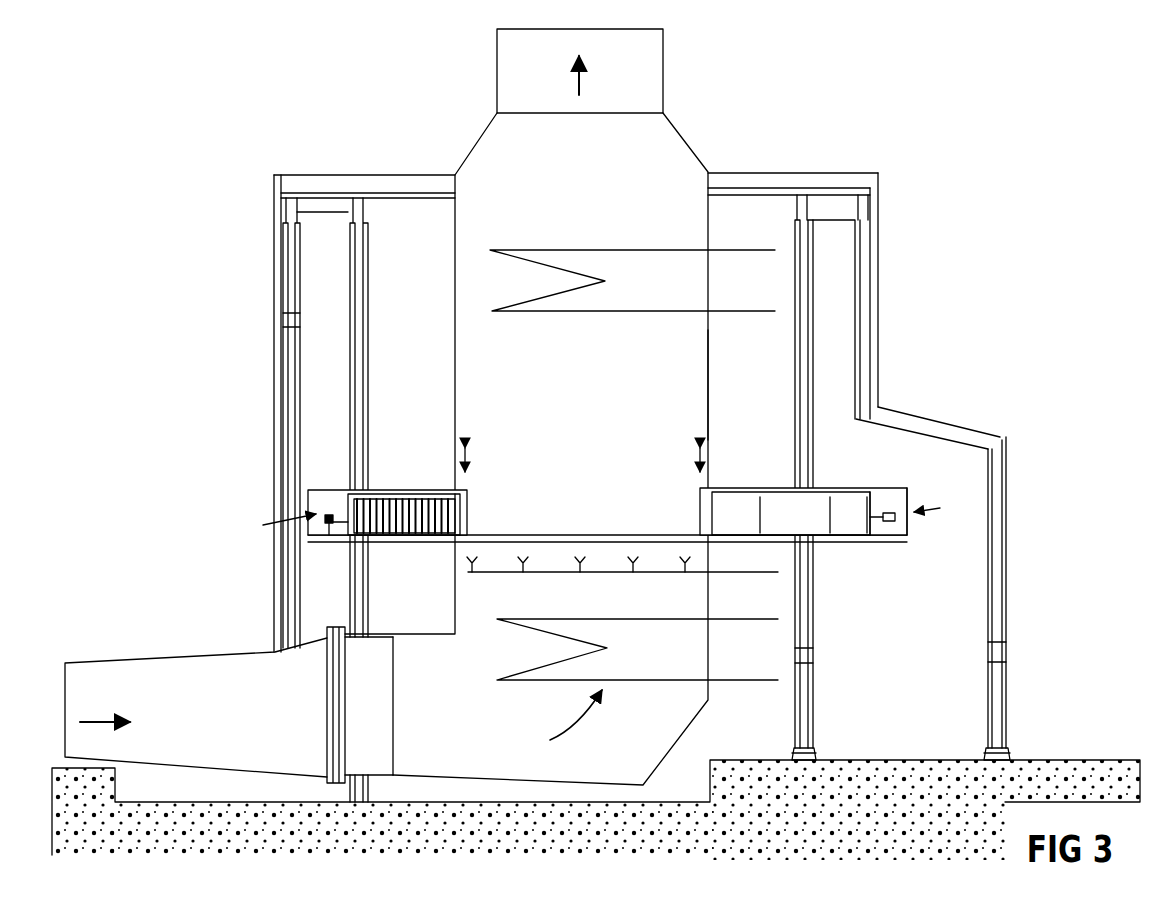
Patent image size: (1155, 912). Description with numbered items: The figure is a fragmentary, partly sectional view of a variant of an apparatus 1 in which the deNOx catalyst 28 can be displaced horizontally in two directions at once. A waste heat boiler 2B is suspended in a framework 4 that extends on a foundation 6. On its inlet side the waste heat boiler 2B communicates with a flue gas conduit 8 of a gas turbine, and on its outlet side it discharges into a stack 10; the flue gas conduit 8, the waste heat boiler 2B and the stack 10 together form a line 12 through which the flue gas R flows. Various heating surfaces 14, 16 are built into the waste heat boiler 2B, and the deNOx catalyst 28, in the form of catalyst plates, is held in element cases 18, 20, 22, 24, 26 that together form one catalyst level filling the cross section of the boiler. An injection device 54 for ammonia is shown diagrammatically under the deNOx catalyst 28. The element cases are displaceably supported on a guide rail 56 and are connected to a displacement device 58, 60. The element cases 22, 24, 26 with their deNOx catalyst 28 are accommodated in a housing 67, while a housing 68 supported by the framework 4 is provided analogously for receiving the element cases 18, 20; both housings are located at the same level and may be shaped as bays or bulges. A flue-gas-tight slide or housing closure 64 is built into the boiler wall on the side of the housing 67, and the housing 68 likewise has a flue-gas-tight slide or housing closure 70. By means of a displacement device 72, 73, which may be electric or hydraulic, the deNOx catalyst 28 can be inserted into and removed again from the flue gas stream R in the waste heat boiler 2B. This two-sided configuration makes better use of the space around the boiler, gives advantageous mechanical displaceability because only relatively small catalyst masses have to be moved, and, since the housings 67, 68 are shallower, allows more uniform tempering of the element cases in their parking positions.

The apparatus 1 is at (795, 156).
The waste heat boiler 2B is at (692, 390).
The framework 4 is at (365, 277).
The foundation 6 is at (66, 822).
The flue gas conduit 8 is at (142, 692).
The stack 10 is at (640, 58).
The line 12 is at (663, 90).
The heating surface 14 is at (613, 620).
The heating surface 16 is at (592, 250).
The element case 18 is at (375, 492).
The element case 20 is at (432, 492).
The element case 22 is at (730, 492).
The element case 24 is at (780, 492).
The element case 26 is at (832, 492).
The deNOx catalyst 28 is at (408, 496).
The injection device 54 is at (727, 572).
The guide rail 56 is at (408, 538).
The displacement device 58 is at (873, 490).
The displacement device 60 is at (942, 519).
The housing closure 64 is at (698, 492).
The housing 67 is at (855, 488).
The housing 68 is at (328, 490).
The housing closure 70 is at (468, 492).
The displacement device 72 is at (262, 537).
The displacement device 73 is at (329, 548).